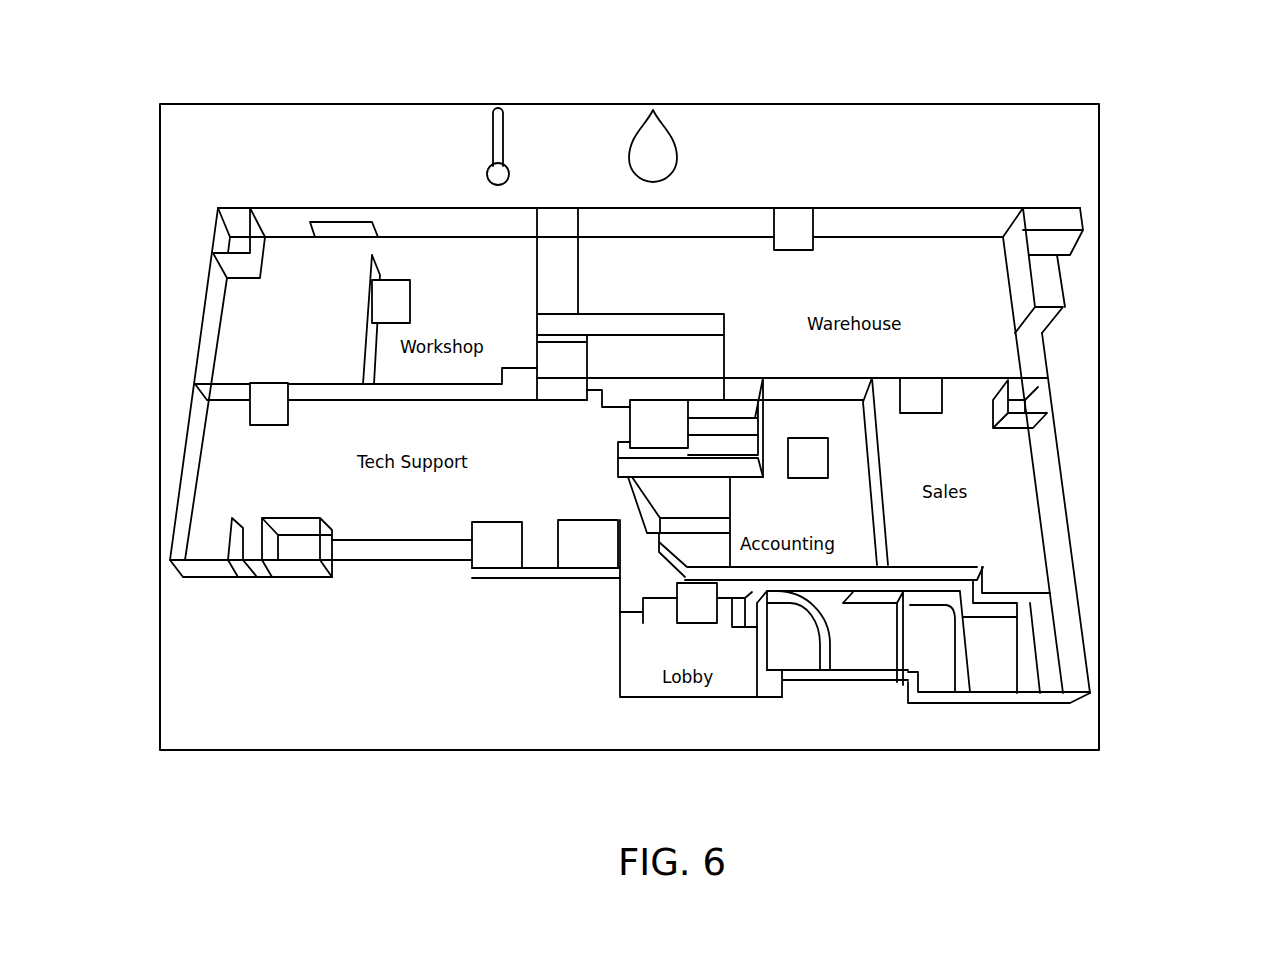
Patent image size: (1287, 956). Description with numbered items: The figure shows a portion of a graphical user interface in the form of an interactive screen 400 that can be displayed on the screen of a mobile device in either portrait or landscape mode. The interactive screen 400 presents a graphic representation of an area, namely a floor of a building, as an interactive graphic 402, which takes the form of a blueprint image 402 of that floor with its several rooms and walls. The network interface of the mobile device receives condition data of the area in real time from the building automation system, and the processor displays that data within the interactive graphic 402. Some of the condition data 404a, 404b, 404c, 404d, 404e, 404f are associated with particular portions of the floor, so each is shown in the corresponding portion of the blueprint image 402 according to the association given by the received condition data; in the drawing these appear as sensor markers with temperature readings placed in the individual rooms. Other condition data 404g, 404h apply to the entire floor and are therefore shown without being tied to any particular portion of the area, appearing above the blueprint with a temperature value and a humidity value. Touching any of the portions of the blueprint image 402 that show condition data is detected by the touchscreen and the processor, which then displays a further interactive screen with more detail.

The interactive screen 400 is at (1163, 98).
The interactive graphic 402 is at (630, 455).
The condition data 404a is at (723, 635).
The condition data 404b is at (837, 470).
The condition data 404c is at (942, 405).
The condition data 404d is at (802, 208).
The condition data 404e is at (250, 412).
The condition data 404f is at (372, 300).
The condition data 404g is at (493, 145).
The condition data 404h is at (668, 133).